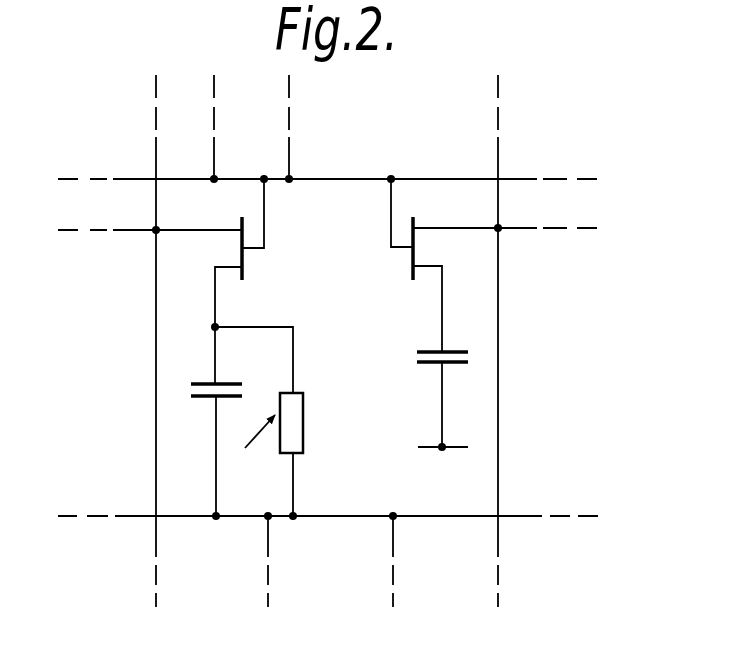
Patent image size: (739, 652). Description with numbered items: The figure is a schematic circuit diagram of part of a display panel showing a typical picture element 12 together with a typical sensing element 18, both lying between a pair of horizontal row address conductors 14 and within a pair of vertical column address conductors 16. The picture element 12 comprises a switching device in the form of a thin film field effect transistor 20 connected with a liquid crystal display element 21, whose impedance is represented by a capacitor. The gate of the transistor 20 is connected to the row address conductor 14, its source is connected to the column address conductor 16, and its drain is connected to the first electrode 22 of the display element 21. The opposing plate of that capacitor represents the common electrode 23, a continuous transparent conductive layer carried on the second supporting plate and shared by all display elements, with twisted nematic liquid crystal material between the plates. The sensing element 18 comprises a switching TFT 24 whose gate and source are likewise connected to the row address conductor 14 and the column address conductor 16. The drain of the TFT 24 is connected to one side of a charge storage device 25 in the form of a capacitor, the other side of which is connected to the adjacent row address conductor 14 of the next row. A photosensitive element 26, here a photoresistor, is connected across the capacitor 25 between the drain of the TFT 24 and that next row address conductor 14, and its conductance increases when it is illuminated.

The picture element 12 is at (462, 309).
The row address conductor 14 is at (355, 179).
The column address conductor 16 is at (498, 167).
The sensing element 18 is at (185, 327).
The thin film field effect transistor 20 is at (403, 253).
The liquid crystal display element 21 is at (454, 366).
The first electrode 22 is at (420, 348).
The common electrode 23 is at (432, 365).
The TFT 24 is at (250, 255).
The charge storage device 25 is at (188, 393).
The photosensitive element 26 is at (303, 440).